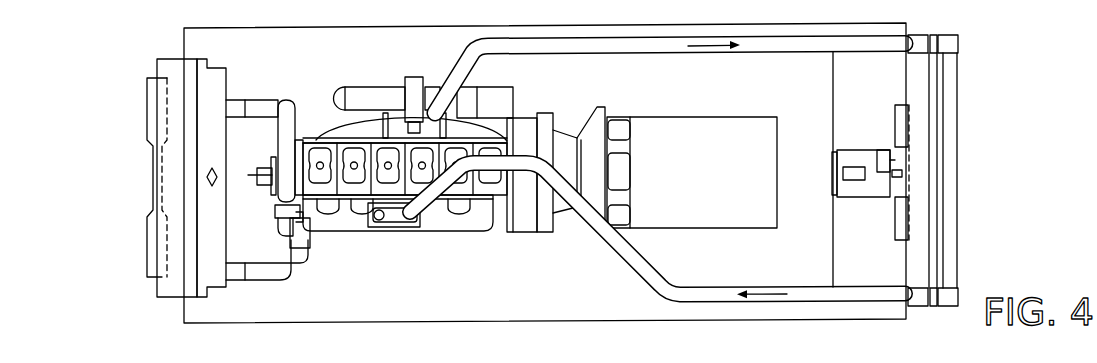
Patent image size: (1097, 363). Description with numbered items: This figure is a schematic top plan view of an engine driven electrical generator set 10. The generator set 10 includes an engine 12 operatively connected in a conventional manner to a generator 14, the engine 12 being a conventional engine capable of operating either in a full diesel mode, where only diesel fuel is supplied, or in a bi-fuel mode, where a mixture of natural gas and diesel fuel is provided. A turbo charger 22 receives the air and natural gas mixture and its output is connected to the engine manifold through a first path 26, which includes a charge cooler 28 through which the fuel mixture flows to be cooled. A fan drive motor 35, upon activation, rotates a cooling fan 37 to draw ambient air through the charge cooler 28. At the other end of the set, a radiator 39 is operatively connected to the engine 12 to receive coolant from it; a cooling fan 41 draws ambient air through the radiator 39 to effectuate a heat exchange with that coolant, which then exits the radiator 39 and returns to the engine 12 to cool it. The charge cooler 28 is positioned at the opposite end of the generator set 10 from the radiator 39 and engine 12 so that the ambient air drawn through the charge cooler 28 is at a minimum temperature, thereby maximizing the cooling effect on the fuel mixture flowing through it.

The generator set 10 is at (972, 156).
The engine 12 is at (364, 243).
The generator 14 is at (690, 116).
The turbo charger 22 is at (415, 77).
The first path 26 is at (595, 47).
The charge cooler 28 is at (958, 98).
The fan drive motor 35 is at (862, 203).
The cooling fan 37 is at (897, 105).
The radiator 39 is at (216, 295).
The cooling fan 41 is at (148, 281).